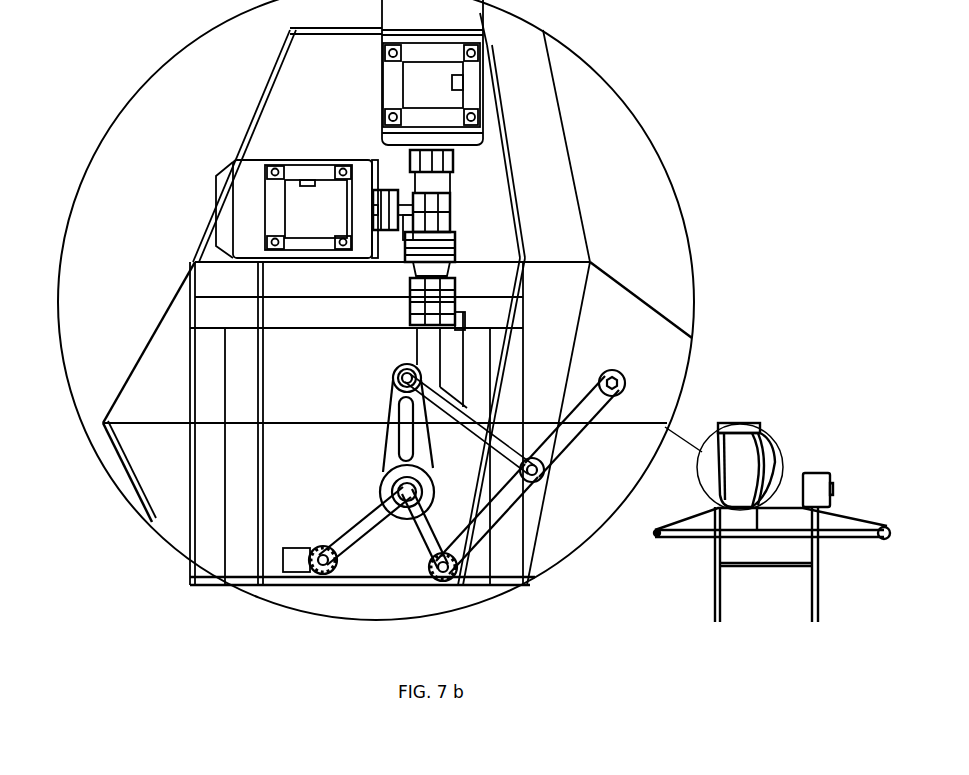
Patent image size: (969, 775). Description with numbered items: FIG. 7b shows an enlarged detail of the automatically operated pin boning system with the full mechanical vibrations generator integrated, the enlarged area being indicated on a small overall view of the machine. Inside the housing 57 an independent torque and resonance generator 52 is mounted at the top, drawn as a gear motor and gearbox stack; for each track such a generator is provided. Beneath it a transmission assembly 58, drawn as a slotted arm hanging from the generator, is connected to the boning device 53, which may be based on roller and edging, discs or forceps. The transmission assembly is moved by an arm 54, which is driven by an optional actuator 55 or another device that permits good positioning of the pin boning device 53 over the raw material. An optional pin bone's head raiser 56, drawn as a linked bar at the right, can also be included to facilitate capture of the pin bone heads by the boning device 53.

The torque and resonance generator 52 is at (468, 222).
The boning device 53 is at (309, 562).
The arm 54 is at (370, 520).
The actuator 55 is at (415, 505).
The pin bone's head raiser 56 is at (507, 502).
The housing 57 is at (772, 470).
The transmission assembly 58 is at (383, 462).